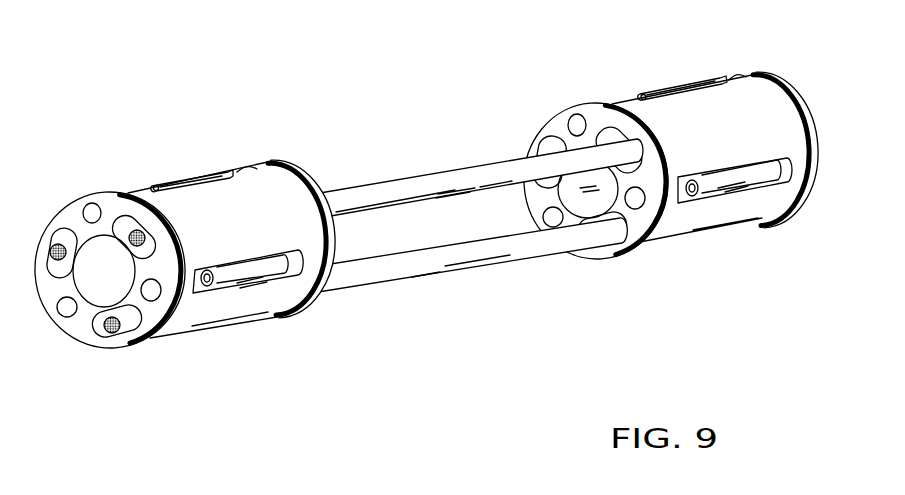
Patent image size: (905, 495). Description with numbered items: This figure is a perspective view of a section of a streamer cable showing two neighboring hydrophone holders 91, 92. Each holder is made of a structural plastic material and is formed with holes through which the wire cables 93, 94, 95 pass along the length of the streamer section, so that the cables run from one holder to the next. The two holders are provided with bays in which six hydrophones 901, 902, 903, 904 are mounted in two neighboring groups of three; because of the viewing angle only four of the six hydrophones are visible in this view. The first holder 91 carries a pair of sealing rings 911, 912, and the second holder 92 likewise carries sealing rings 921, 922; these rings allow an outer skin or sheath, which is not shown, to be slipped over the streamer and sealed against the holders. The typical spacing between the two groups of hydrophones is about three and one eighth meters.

The hydrophone holder 91 is at (240, 247).
The hydrophone holder 92 is at (717, 160).
The wire cable 93 is at (438, 174).
The wire cable 94 is at (52, 249).
The wire cable 95 is at (409, 284).
The hydrophone 901 is at (230, 170).
The hydrophone 902 is at (208, 288).
The hydrophone 903 is at (640, 96).
The hydrophone 904 is at (692, 197).
The sealing ring 911 is at (130, 344).
The sealing ring 912 is at (282, 318).
The sealing ring 921 is at (631, 248).
The sealing ring 922 is at (758, 229).